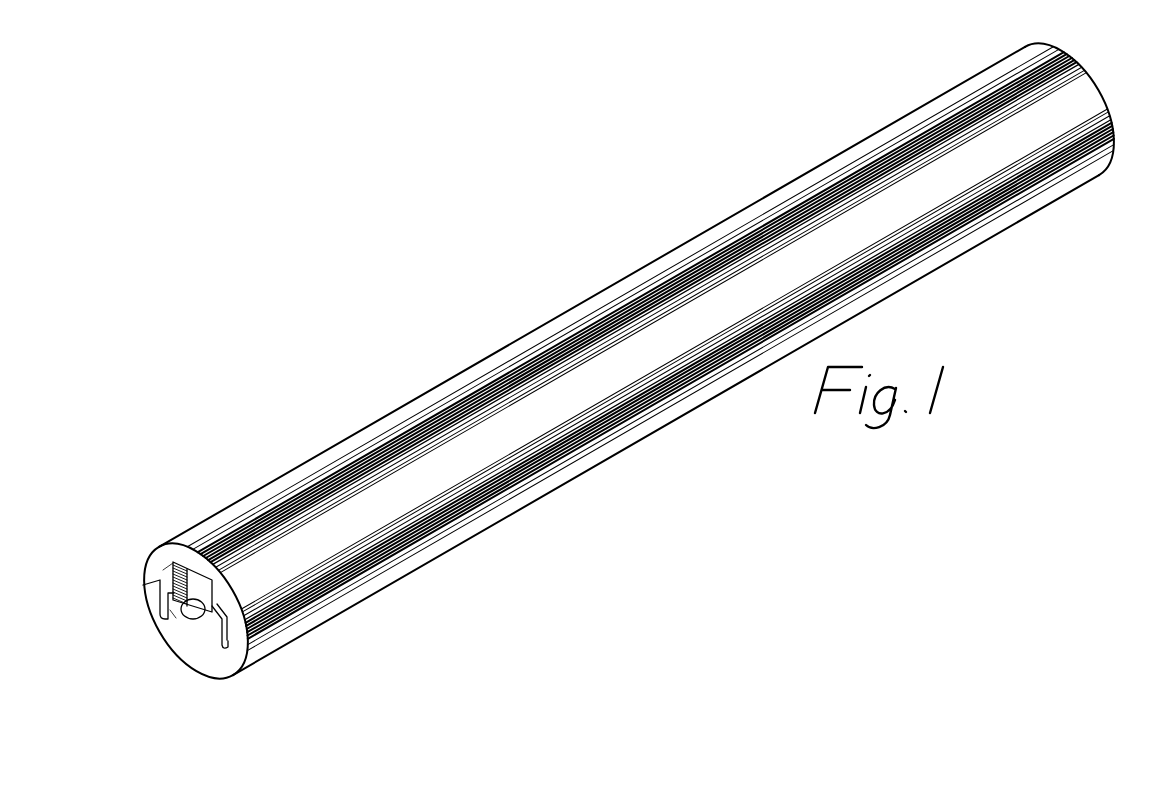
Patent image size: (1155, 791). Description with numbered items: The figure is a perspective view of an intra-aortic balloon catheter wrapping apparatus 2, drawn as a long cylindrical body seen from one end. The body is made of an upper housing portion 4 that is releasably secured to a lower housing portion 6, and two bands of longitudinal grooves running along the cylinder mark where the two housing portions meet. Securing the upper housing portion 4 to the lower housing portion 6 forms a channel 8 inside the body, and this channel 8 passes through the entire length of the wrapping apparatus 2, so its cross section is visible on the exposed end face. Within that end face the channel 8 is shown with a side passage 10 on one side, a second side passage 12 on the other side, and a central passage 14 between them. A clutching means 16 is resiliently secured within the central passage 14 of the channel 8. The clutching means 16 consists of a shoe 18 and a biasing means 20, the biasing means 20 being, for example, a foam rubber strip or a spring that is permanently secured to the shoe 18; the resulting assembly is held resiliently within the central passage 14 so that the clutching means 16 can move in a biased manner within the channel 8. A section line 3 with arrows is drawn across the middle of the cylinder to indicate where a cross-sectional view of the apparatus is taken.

The intra-aortic balloon catheter wrapping apparatus 2 is at (408, 362).
The section line 3- 3 is at (623, 302).
The upper housing portion 4 is at (888, 167).
The lower housing portion 6 is at (278, 642).
The channel 8 is at (172, 626).
The side passage 10 is at (164, 601).
The side passage 12 is at (228, 648).
The central passage 14 is at (190, 617).
The clutching means 16 is at (158, 565).
The shoe 18 is at (218, 595).
The biasing means 20 is at (186, 570).